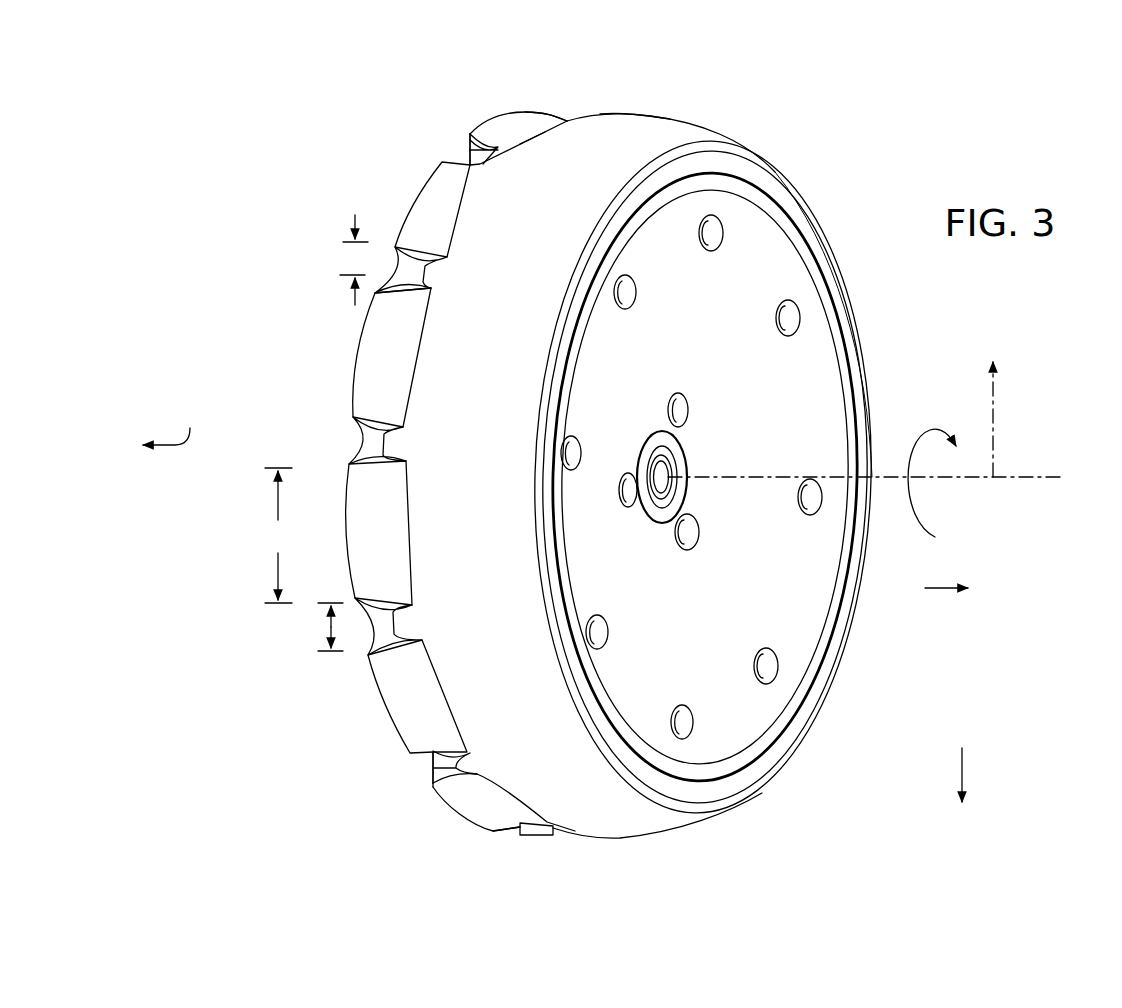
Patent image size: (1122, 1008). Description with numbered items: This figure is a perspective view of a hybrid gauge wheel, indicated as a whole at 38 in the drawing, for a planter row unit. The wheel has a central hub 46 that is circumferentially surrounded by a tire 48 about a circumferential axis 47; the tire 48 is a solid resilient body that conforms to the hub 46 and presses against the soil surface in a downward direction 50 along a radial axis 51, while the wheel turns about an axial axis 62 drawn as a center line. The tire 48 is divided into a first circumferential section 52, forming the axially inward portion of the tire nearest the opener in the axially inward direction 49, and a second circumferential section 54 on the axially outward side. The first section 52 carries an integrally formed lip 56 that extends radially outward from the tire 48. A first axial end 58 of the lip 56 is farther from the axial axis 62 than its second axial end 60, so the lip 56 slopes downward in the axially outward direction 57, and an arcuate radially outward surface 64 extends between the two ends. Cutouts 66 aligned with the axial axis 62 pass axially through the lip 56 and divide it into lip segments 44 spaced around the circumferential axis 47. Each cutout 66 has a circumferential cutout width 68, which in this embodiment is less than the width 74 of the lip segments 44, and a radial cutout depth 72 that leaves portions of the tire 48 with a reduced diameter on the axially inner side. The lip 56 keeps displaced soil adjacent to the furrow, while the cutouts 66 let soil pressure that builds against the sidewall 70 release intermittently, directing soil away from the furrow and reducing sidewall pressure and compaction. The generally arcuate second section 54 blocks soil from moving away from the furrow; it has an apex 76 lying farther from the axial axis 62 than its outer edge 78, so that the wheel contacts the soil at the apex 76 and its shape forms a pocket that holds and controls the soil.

The wheel assembly 38 is at (772, 94).
The lip segments 44 is at (497, 123).
The hub 46 is at (809, 363).
The circumferential axis 47 is at (925, 522).
The tire 48 is at (622, 83).
The axially inward direction 49 is at (168, 417).
The downward direction 50 is at (965, 770).
The radial axis 51 is at (995, 421).
The first circumferential section 52 is at (514, 107).
The second circumferential section 54 is at (690, 116).
The lip 56 is at (469, 124).
The axially outward direction 57 is at (946, 589).
The first axial end 58 is at (466, 152).
The second axial end 60 is at (525, 140).
The axial axis 62 is at (1048, 475).
The radially outward surface 64 is at (382, 352).
The cutouts 66 is at (388, 239).
The cutout width 68 is at (327, 627).
The sidewall 70 is at (417, 762).
The cutout depth 72 is at (350, 297).
The width of the lip segments 74 is at (278, 535).
The apex 76 is at (638, 113).
The outer edge 78 is at (762, 158).